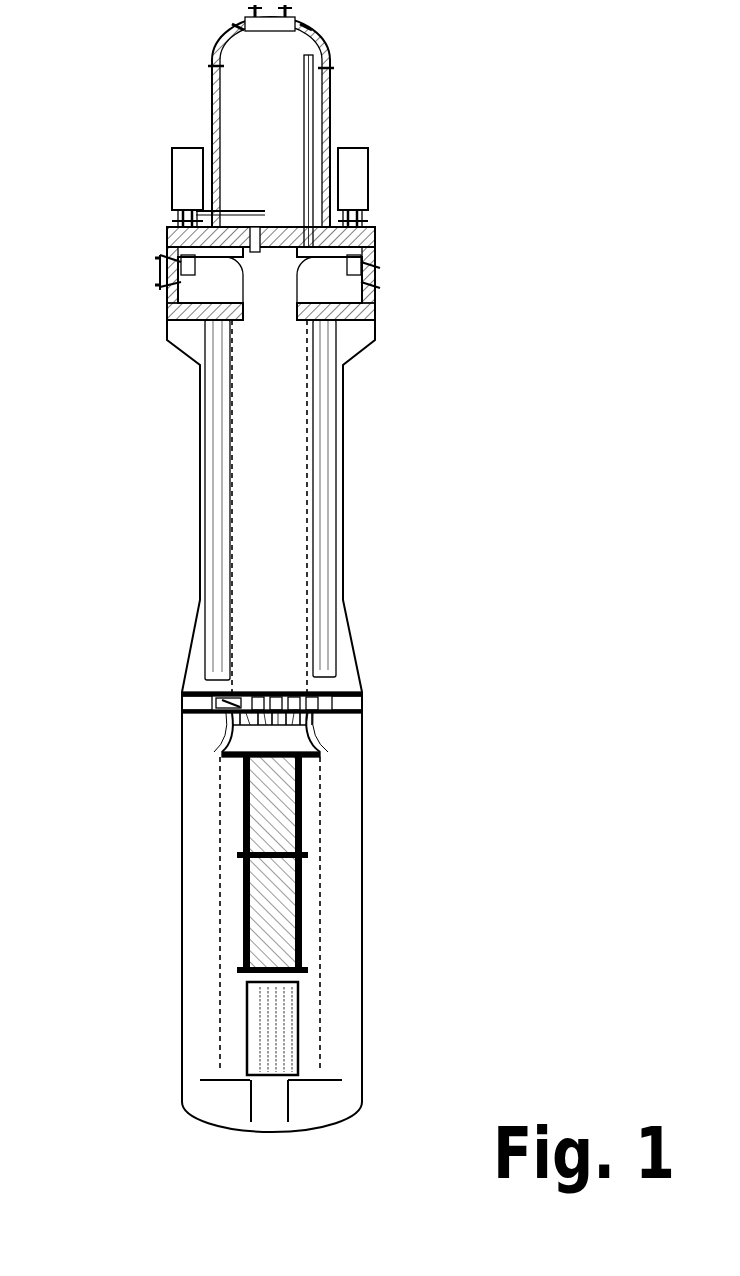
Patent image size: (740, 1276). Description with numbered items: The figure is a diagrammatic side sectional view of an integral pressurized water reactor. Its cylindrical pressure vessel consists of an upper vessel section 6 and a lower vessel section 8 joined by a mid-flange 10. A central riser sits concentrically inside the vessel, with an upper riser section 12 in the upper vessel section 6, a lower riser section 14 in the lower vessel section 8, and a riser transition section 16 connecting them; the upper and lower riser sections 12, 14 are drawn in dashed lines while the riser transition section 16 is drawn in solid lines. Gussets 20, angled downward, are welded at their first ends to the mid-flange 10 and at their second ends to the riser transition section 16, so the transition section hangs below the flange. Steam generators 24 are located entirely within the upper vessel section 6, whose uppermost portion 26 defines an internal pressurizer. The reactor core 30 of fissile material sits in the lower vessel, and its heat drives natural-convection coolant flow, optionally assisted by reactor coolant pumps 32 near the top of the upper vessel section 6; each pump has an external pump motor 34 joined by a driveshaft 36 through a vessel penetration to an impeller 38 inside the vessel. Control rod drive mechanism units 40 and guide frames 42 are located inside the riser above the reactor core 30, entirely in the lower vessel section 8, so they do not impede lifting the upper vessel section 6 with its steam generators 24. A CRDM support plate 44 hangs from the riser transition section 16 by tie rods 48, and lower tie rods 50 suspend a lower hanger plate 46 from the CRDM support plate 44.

The upper vessel section 6 is at (345, 540).
The lower vessel section 8 is at (362, 757).
The mid-flange 10 is at (362, 703).
The upper riser section 12 is at (232, 452).
The lower riser section 14 is at (218, 1000).
The riser transition section 16 is at (235, 735).
The gussets 20 is at (237, 705).
The steam generators 24 is at (328, 452).
The uppermost portion 26 is at (242, 103).
The reactor core 30 is at (273, 1030).
The reactor coolant pumps 32 is at (122, 195).
The pump motor 34 is at (185, 175).
The driveshaft 36 is at (168, 241).
The impeller 38 is at (183, 272).
The control rod drive mechanism units 40 is at (260, 812).
The guide frames 42 is at (260, 907).
The CRDM support plate 44 is at (305, 855).
The lower hanger plate 46 is at (305, 970).
The tie rods 48 is at (300, 815).
The lower tie rods 50 is at (262, 905).